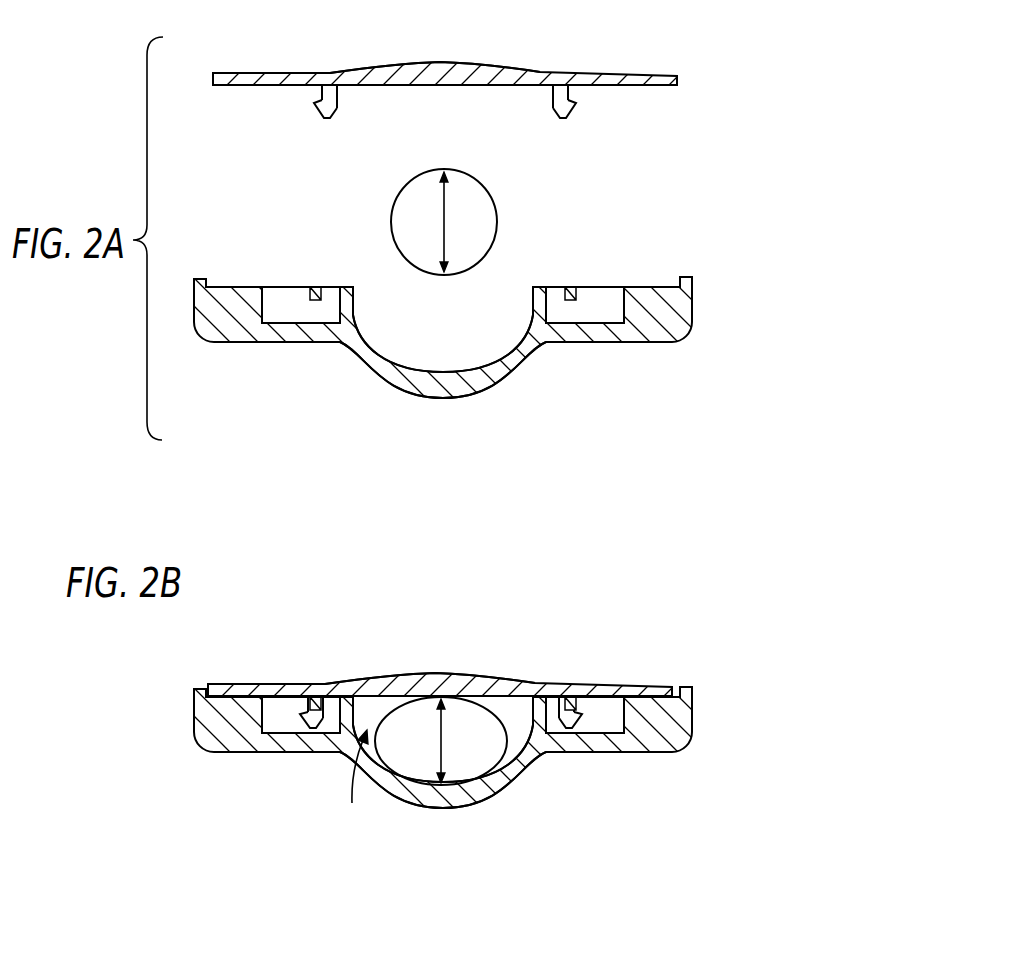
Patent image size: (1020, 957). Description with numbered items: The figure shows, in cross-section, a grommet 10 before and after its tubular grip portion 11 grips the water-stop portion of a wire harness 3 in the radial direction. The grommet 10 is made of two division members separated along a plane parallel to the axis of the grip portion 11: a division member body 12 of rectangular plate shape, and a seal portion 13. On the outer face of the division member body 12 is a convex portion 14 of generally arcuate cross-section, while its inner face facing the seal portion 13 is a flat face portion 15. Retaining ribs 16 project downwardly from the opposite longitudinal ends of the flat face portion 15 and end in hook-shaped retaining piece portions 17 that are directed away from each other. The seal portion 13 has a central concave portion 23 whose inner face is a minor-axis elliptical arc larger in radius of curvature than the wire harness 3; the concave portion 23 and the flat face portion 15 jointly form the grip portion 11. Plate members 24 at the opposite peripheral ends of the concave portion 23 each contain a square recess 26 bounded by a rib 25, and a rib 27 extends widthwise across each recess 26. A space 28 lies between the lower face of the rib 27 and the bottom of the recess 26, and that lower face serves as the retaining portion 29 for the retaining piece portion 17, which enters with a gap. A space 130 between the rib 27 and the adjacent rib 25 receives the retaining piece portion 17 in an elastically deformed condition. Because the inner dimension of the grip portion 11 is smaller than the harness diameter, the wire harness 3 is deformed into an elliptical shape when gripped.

In FIG. 2A, the wire harness 3 is at (499, 222).
In FIG. 2B, the wire harness 3 is at (496, 772).
In FIG. 2A, the grommet 10 is at (773, 200).
In FIG. 2B, the grommet 10 is at (651, 620).
In FIG. 2B, the grip portion 11 is at (354, 779).
In FIG. 2A, the division member body 12 is at (680, 78).
In FIG. 2A, the seal portion 13 is at (693, 297).
In FIG. 2A, the convex portion 14 is at (455, 60).
In FIG. 2B, the convex portion 14 is at (469, 673).
In FIG. 2A, the flat face portion 15 is at (443, 88).
In FIG. 2B, the flat face portion 15 is at (377, 698).
In FIG. 2A, the retaining rib 16 is at (320, 92).
In FIG. 2B, the retaining rib 16 is at (318, 698).
In FIG. 2A, the retaining piece portion 17 is at (318, 110).
In FIG. 2B, the retaining piece portion 17 is at (316, 726).
In FIG. 2A, the concave portion 23 is at (400, 385).
In FIG. 2B, the concave portion 23 is at (397, 788).
In FIG. 2A, the plate member 24 is at (455, 400).
In FIG. 2B, the plate member 24 is at (441, 810).
In FIG. 2A, the rib 25 is at (345, 287).
In FIG. 2B, the rib 25 is at (348, 698).
In FIG. 2A, the recess 26 is at (292, 320).
In FIG. 2B, the recess 26 is at (275, 733).
In FIG. 2A, the rib 27 is at (315, 287).
In FIG. 2B, the rib 27 is at (311, 712).
In FIG. 2A, the space 28 is at (296, 343).
In FIG. 2A, the retaining portion 29 is at (318, 323).
In FIG. 2B, the retaining portion 29 is at (298, 738).
In FIG. 2A, the space 130 is at (330, 325).